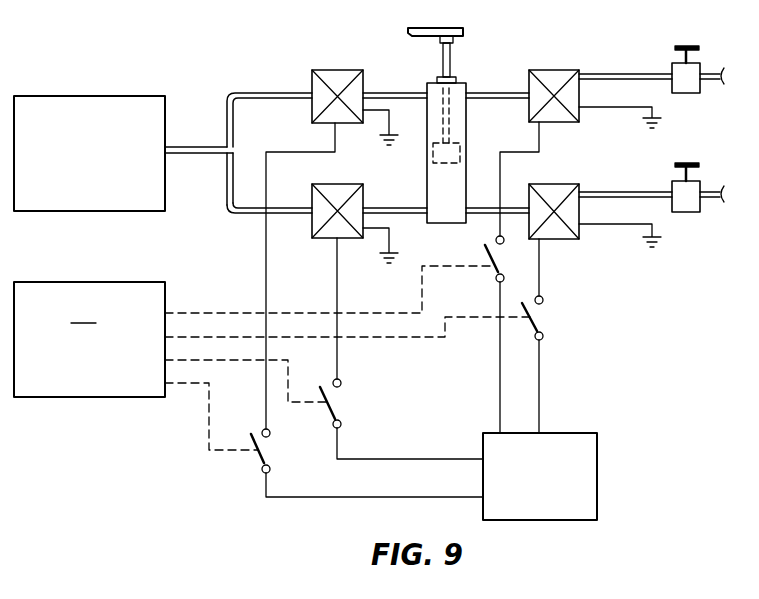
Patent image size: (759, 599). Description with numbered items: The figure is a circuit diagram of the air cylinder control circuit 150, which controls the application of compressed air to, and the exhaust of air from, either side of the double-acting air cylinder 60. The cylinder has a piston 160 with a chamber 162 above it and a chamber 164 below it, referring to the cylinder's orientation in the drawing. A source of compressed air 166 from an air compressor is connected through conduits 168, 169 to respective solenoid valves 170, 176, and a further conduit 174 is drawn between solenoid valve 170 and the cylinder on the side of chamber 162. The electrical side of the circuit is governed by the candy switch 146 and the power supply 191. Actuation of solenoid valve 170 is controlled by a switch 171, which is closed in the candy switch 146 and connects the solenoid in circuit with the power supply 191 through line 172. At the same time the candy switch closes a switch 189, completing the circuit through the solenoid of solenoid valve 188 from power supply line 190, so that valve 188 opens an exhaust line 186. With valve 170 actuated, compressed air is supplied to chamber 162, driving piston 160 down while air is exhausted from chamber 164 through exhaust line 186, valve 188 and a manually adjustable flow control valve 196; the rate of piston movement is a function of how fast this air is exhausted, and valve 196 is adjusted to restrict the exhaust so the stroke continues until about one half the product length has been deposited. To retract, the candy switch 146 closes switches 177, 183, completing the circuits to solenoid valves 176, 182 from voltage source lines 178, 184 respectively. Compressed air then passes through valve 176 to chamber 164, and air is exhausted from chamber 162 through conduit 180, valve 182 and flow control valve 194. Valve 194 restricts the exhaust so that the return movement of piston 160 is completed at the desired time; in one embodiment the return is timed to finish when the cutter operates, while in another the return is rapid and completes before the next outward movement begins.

The air cylinder control circuit 150 is at (203, 57).
The candy switch 146 is at (273, 358).
The source of compressed air 166 is at (40, 95).
The conduit 168 is at (246, 92).
The conduit 169 is at (243, 212).
The solenoid valve 170 is at (325, 70).
The conduit 174 is at (379, 92).
The solenoid valve 176 is at (312, 196).
The conduit 180 is at (493, 93).
The solenoid valve 182 is at (556, 70).
The exhaust line 186 is at (514, 207).
The solenoid valve 188 is at (560, 241).
The double-acting air cylinder 60 is at (466, 128).
The piston 160 is at (433, 152).
The chamber 162 is at (435, 113).
The chamber 164 is at (446, 186).
The flow control valve 194 is at (683, 95).
The flow control valve 196 is at (684, 213).
The switch 171 is at (262, 466).
The line 172 is at (309, 500).
The switch 177 is at (342, 416).
The voltage source line 178 is at (442, 459).
The switch 183 is at (493, 274).
The voltage source line 184 is at (498, 377).
The switch 189 is at (545, 322).
The power supply line 190 is at (540, 409).
The power supply 191 is at (587, 451).